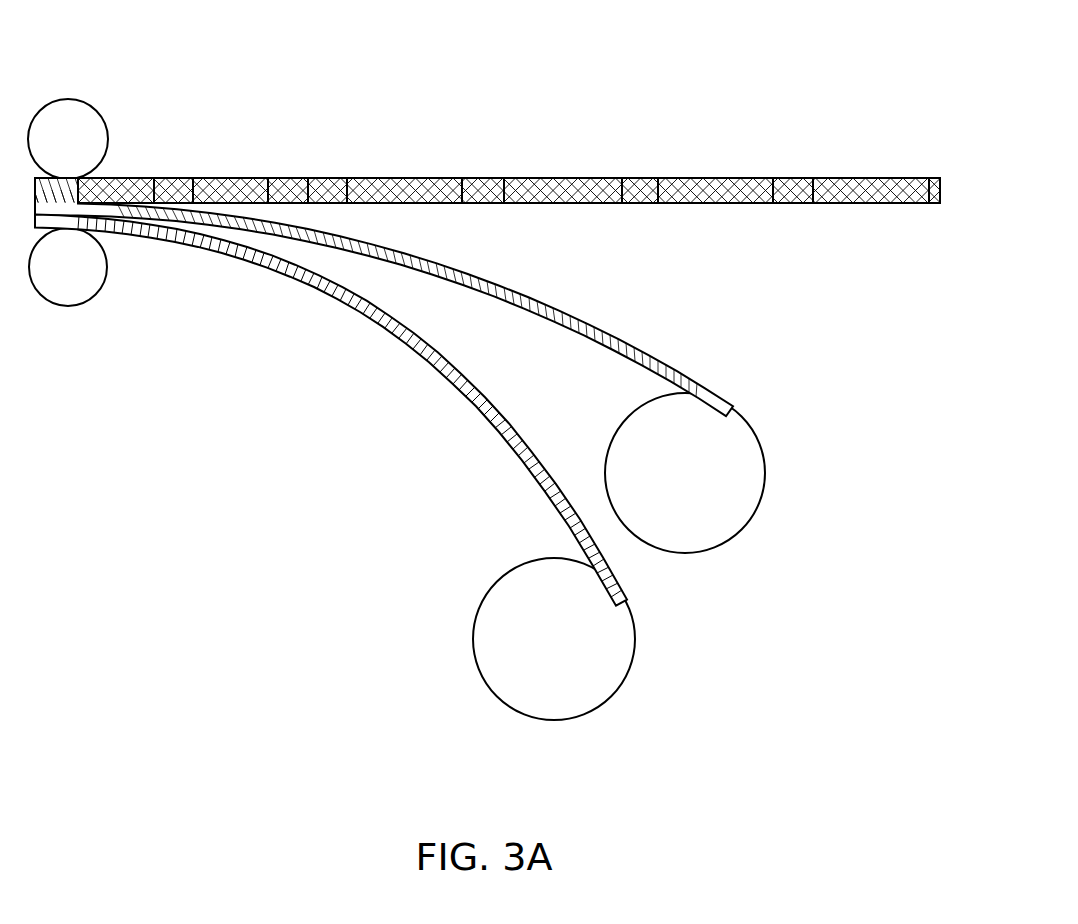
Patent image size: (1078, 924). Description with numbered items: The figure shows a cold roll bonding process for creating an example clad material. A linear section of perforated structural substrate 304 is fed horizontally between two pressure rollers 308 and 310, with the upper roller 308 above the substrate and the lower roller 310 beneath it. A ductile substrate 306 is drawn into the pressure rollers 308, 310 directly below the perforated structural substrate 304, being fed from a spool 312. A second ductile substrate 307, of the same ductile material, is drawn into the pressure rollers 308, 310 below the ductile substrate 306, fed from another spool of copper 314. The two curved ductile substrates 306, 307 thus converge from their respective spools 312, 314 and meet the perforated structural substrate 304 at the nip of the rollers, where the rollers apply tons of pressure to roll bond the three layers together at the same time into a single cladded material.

The perforated structural substrate 304 is at (724, 155).
The ductile substrate 306 is at (628, 340).
The ductile substrate 307 is at (547, 455).
The pressure roller 308 is at (70, 99).
The pressure roller 310 is at (67, 306).
The spool 312 is at (683, 553).
The spool of copper 314 is at (553, 722).